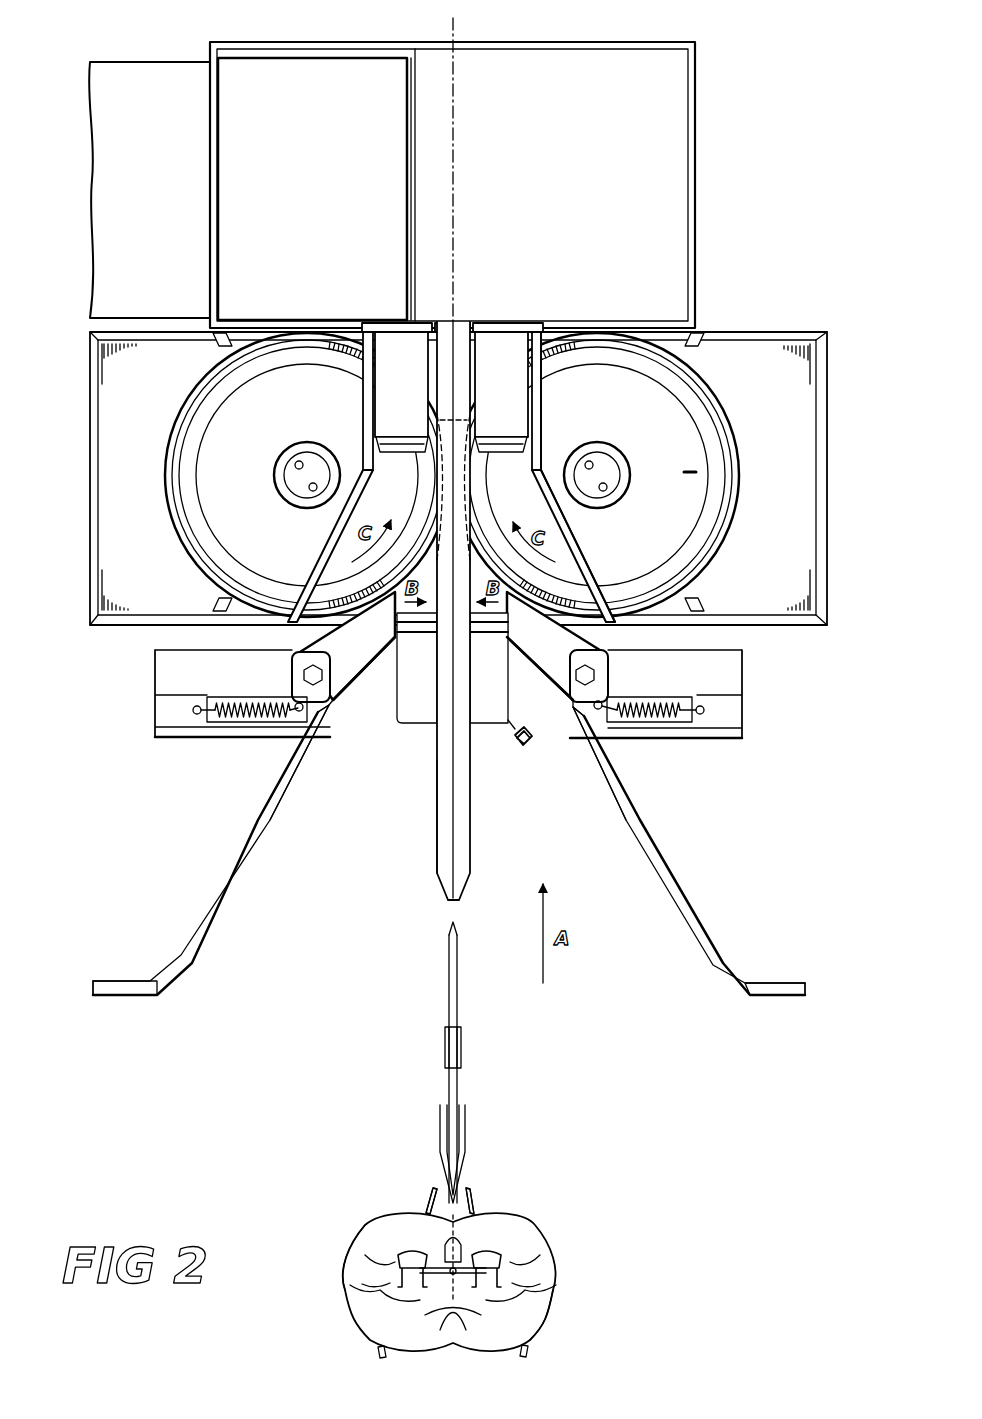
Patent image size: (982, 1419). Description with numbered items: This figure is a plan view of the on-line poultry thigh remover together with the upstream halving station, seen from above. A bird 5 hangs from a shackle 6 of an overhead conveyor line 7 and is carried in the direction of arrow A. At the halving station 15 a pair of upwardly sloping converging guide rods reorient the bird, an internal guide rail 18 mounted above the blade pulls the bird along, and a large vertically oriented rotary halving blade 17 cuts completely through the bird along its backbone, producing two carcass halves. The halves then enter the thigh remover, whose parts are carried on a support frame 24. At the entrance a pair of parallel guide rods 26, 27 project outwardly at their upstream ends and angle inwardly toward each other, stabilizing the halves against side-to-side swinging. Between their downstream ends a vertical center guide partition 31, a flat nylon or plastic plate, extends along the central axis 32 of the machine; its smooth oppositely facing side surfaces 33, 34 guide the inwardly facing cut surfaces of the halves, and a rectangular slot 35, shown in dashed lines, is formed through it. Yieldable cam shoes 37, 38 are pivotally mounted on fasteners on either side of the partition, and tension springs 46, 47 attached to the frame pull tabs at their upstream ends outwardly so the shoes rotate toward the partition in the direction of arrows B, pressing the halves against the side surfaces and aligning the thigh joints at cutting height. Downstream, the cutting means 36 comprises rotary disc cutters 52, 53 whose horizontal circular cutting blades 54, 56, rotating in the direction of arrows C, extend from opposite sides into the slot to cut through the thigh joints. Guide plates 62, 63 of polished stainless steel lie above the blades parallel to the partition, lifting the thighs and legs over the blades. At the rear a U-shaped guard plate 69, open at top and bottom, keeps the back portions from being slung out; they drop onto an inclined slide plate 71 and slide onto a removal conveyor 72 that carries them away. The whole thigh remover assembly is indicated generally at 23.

The bird 5 is at (629, 1282).
The shackle 6 is at (437, 1262).
The overhead conveyor line 7 is at (478, 1222).
The halving station 15 is at (405, 1047).
The rotary halving blade 17 is at (458, 1002).
The internal guide rail 18 is at (466, 1112).
The actuating assembly 23 is at (136, 796).
The support frame 24 is at (742, 685).
The guide rod 26 is at (640, 848).
The guide rod 27 is at (272, 838).
The vertical center guide partition 31 is at (444, 901).
The central axis 32 is at (453, 919).
The side surface 33 is at (472, 808).
The side surface 34 is at (437, 845).
The rectangular slot 35 is at (455, 510).
The cutting means 36 is at (569, 376).
The yieldable cam shoe 37 is at (603, 636).
The yieldable cam shoe 38 is at (323, 628).
The tension spring 46 is at (668, 720).
The tension spring 47 is at (235, 737).
The rotary disc cutter 52 is at (725, 413).
The rotary disc cutter 53 is at (196, 398).
The circular cutting blade 54 is at (626, 546).
The circular cutting blade 56 is at (245, 546).
The guide plate 62 is at (545, 413).
The guide plate 63 is at (366, 407).
The U-shaped guard plate 69 is at (604, 42).
The slide plate 71 is at (556, 166).
The removal conveyor 72 is at (300, 170).